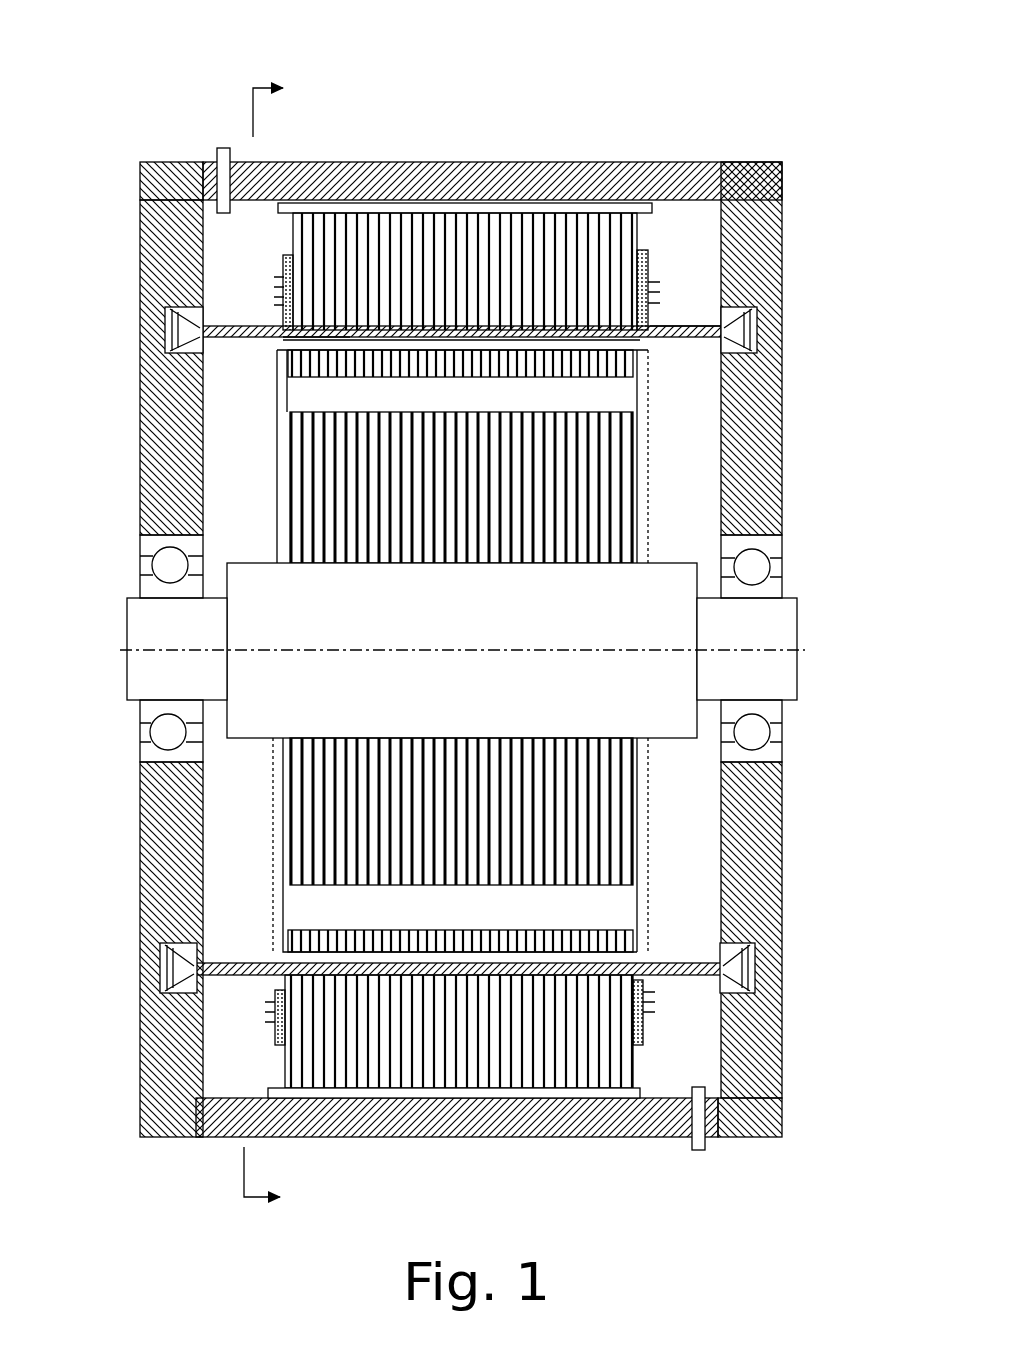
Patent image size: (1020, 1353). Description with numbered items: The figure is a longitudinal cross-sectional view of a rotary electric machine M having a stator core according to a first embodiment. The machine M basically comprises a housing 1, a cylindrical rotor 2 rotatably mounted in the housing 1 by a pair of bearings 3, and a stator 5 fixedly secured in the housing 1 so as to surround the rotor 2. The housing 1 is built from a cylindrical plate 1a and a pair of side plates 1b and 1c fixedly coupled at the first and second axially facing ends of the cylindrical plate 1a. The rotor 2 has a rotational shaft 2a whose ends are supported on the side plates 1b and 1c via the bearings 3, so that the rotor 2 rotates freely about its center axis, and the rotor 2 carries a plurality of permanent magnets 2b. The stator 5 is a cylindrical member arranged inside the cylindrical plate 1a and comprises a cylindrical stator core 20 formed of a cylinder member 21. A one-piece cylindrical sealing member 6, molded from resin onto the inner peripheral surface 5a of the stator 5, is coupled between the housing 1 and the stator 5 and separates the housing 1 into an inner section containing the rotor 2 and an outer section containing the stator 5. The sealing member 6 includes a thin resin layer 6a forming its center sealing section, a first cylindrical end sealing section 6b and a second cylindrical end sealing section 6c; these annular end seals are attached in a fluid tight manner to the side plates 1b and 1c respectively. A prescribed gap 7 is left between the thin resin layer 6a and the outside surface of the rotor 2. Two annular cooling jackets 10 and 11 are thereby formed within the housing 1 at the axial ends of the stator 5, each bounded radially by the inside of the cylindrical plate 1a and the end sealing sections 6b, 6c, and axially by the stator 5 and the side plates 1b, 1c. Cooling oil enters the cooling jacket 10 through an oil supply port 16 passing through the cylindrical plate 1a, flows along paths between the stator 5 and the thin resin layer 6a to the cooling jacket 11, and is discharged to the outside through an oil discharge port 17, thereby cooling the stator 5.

The rotary electric machine M is at (703, 118).
The housing 1 is at (520, 160).
The cylindrical plate 1a is at (378, 163).
The side plate 1b is at (783, 405).
The side plate 1c is at (140, 392).
The rotor 2 is at (509, 651).
The rotational shaft 2a is at (797, 625).
The permanent magnets 2b is at (620, 905).
The bearings 3 is at (140, 745).
The stator 5 is at (574, 228).
The inner peripheral surface 5a is at (630, 347).
The sealing member 6 is at (457, 353).
The thin resin layer 6a is at (330, 335).
The first cylindrical end sealing section 6b is at (685, 325).
The second cylindrical end sealing section 6c is at (222, 325).
The gap 7 is at (645, 958).
The cooling jacket 10 is at (232, 235).
The cooling jacket 11 is at (690, 1057).
The oil supply port 16 is at (217, 150).
The oil discharge port 17 is at (705, 1148).
The stator core 20 is at (653, 250).
The cylinder member 21 is at (570, 205).